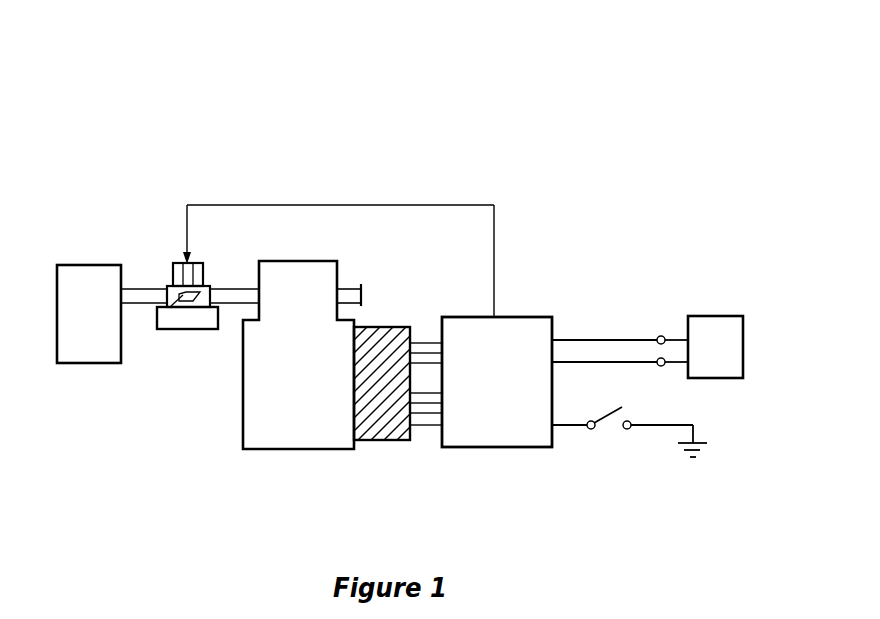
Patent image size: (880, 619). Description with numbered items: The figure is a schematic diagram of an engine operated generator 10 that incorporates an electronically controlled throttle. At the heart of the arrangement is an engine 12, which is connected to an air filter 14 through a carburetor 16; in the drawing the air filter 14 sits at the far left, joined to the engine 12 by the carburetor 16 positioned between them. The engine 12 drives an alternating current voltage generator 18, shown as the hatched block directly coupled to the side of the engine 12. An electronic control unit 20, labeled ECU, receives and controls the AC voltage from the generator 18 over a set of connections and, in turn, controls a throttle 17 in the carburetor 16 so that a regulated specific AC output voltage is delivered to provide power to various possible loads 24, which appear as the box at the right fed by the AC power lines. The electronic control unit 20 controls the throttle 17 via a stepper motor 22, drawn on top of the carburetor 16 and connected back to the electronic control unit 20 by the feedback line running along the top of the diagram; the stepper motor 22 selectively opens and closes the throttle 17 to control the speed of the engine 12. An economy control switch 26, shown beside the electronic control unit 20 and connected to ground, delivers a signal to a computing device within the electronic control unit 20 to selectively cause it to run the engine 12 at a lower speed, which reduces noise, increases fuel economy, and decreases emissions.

The engine operated generator 10 is at (433, 145).
The engine 12 is at (302, 440).
The air filter 14 is at (80, 356).
The carburetor 16 is at (178, 330).
The throttle 17 is at (191, 296).
The alternating current (AC) voltage generator 18 is at (377, 435).
The electronic control unit (ECU) 20 is at (511, 437).
The stepper motor 22 is at (173, 272).
The loads 24 is at (726, 371).
The economy control switch 26 is at (594, 430).